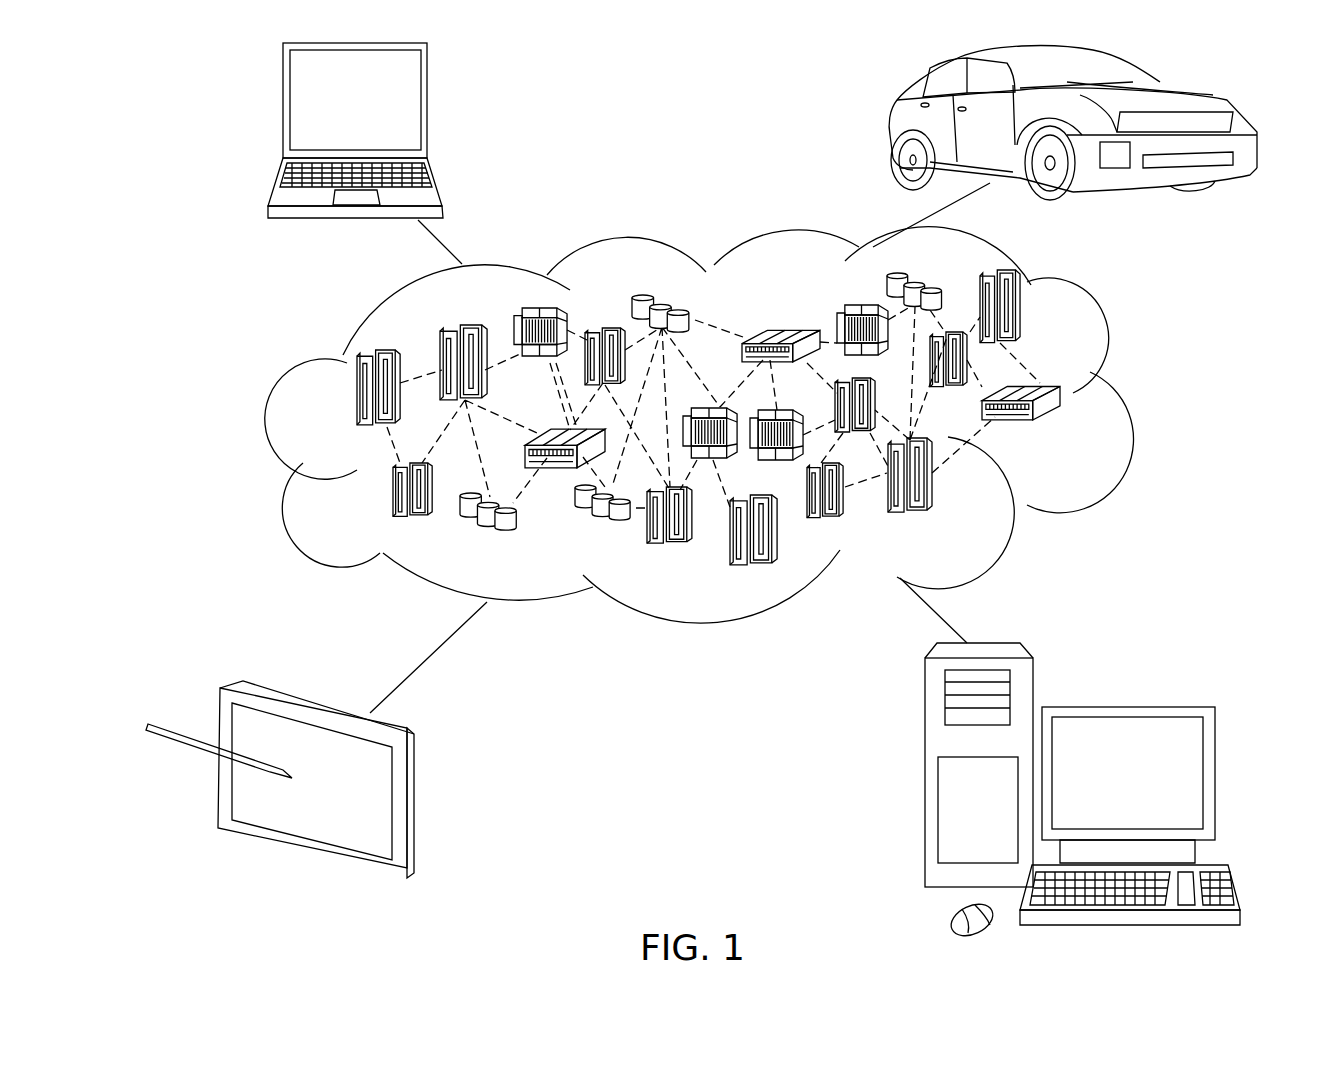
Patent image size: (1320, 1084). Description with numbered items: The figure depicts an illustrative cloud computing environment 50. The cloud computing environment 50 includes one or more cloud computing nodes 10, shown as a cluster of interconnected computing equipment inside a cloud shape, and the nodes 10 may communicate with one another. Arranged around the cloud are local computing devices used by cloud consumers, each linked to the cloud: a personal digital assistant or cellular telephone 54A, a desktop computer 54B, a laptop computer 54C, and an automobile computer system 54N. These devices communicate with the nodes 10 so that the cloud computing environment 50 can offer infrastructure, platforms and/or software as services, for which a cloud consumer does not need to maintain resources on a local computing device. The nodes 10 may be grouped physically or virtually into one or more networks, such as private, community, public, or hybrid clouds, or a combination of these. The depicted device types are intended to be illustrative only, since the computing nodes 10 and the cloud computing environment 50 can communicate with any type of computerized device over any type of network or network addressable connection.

The cloud computing nodes 10 is at (1070, 432).
The cloud computing environment 50 is at (1124, 400).
The personal digital assistant (PDA) or cellular telephone 54A is at (417, 803).
The desktop computer 54B is at (1125, 707).
The laptop computer 54C is at (430, 108).
The automobile computer system 54N is at (897, 128).